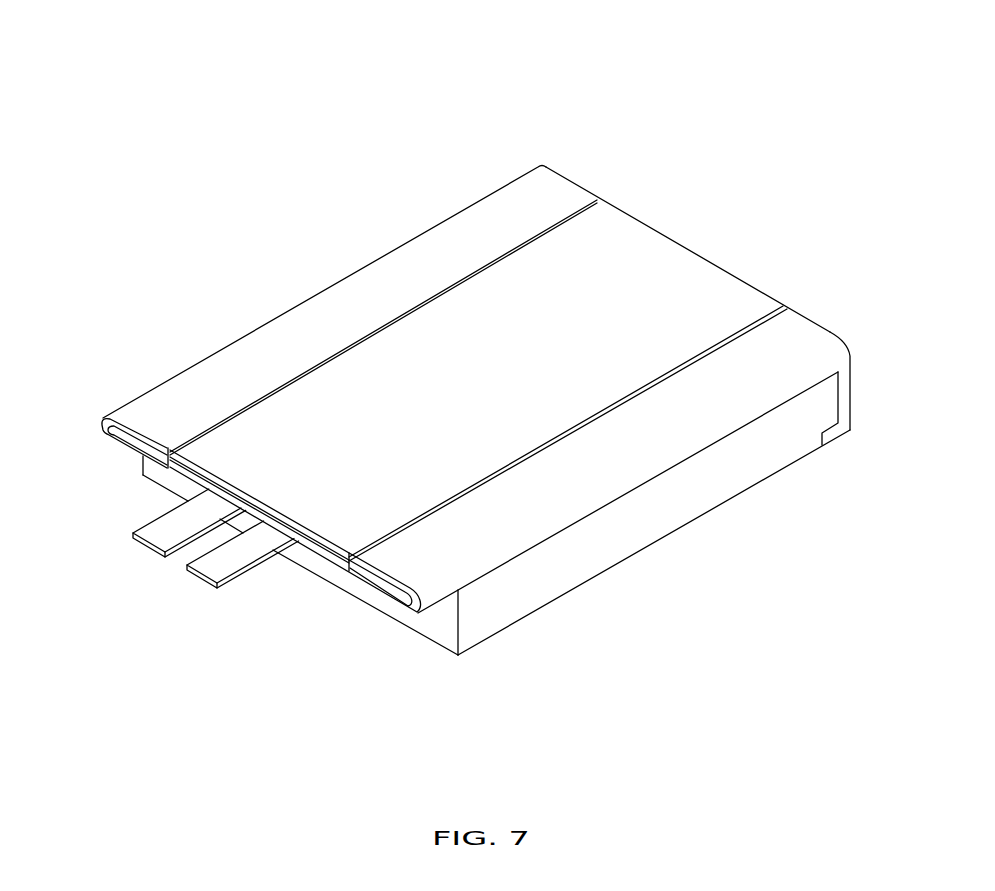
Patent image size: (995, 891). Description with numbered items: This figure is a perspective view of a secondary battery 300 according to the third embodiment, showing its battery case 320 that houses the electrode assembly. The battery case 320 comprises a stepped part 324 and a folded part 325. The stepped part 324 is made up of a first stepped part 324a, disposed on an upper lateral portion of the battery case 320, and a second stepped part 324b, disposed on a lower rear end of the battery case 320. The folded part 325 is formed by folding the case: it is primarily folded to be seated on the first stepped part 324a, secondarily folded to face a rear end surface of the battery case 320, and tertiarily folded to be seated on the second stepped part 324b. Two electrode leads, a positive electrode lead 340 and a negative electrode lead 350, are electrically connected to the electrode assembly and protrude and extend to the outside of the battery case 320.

The secondary battery 300 is at (746, 53).
The battery case 320 is at (623, 243).
The stepped part 324 is at (803, 613).
The first stepped part 324a is at (383, 594).
The second stepped part 324b is at (829, 428).
The folded part 325 is at (555, 181).
The positive electrode lead 340 is at (143, 547).
The negative electrode lead 350 is at (199, 580).